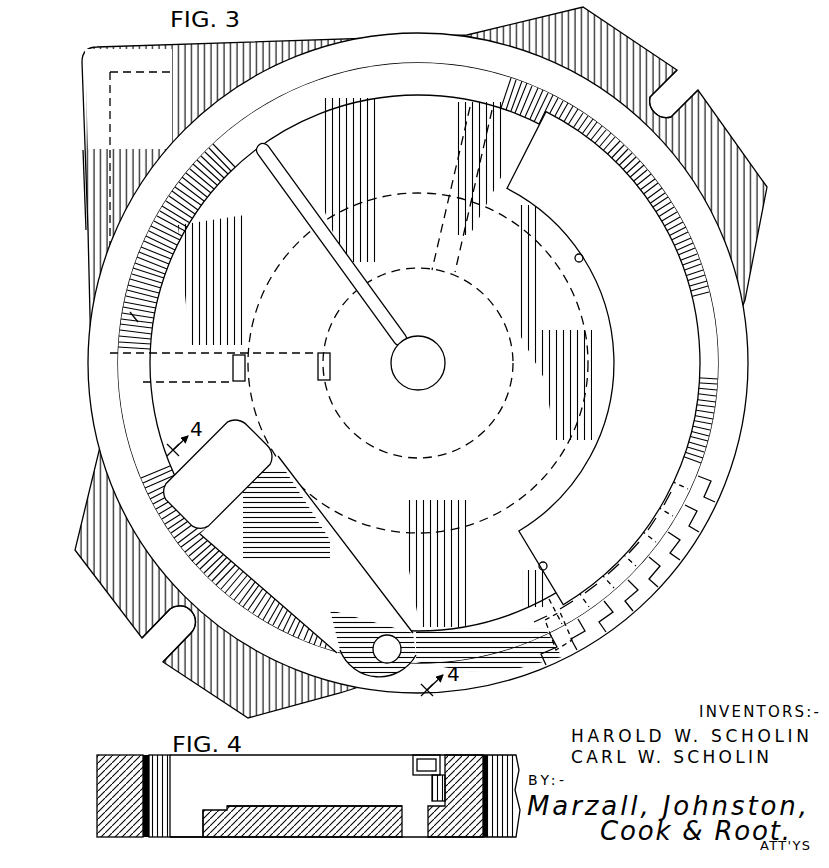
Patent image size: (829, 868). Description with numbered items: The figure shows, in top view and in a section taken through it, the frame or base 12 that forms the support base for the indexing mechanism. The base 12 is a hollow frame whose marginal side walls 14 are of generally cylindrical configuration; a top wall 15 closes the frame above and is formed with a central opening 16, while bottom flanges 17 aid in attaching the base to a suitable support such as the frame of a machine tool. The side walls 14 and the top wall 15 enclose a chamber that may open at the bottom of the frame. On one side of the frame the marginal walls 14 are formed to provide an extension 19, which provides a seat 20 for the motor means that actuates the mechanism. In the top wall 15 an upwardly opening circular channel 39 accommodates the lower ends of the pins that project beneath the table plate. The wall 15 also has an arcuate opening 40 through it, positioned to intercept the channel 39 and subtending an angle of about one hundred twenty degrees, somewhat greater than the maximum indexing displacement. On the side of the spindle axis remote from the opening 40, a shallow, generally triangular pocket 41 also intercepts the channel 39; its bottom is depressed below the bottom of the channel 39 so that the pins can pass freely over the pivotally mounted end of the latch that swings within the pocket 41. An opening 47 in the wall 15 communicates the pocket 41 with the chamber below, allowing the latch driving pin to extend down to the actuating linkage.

In FIG. 3, the frame or base 12 is at (742, 348).
In FIG. 4, the frame or base 12 is at (100, 793).
In FIG. 3, the marginal side walls 14 is at (94, 389).
In FIG. 4, the marginal side walls 14 is at (491, 752).
In FIG. 3, the top wall 15 is at (407, 240).
In FIG. 4, the top wall 15 is at (268, 822).
In FIG. 3, the central opening 16 is at (434, 384).
In FIG. 3, the bottom flanges 17 is at (642, 50).
In FIG. 3, the extension 19 is at (154, 119).
In FIG. 3, the seat 20 is at (84, 221).
In FIG. 3, the circular channel 39 is at (130, 320).
In FIG. 4, the circular channel 39 is at (432, 762).
In FIG. 3, the arcuate opening 40 is at (578, 262).
In FIG. 3, the pocket 41 is at (340, 632).
In FIG. 4, the pocket 41 is at (320, 770).
In FIG. 3, the opening 47 is at (237, 492).
In FIG. 4, the opening 47 is at (201, 819).